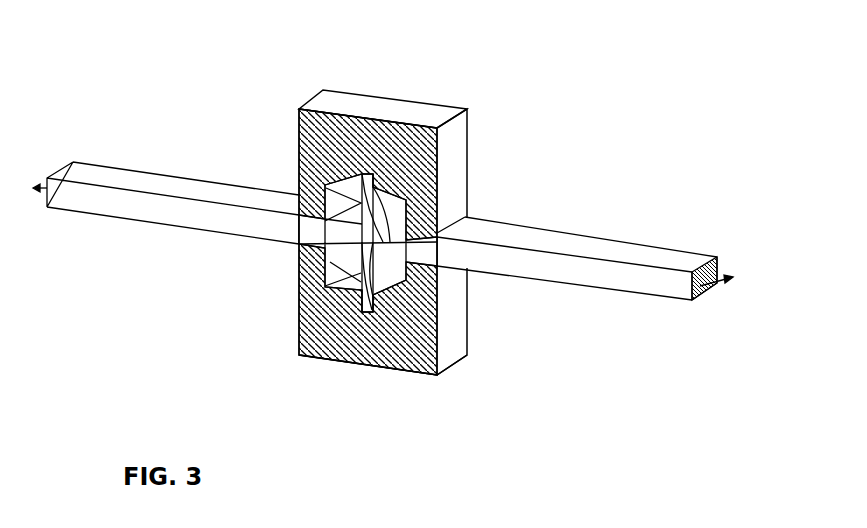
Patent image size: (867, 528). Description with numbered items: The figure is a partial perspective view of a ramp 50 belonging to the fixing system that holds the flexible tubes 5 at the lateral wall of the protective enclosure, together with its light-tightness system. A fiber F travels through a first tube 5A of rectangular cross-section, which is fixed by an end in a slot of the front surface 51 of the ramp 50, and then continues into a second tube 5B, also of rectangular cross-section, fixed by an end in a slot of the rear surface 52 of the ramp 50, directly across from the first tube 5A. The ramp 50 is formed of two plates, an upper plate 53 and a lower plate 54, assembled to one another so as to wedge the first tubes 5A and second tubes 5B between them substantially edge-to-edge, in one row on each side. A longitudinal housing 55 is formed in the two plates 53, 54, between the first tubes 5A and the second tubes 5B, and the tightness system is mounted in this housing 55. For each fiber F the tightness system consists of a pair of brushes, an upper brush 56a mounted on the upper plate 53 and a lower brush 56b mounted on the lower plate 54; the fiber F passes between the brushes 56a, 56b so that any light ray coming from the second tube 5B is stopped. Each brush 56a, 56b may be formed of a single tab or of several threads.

The flexible tube 5 is at (383, 207).
The first tube 5A is at (125, 169).
The second tube 5B is at (593, 238).
The fiber F is at (726, 266).
The ramp 50 is at (374, 229).
The front surface 51 is at (295, 127).
The rear surface 52 is at (462, 163).
The upper plate 53 is at (457, 107).
The lower plate 54 is at (412, 363).
The longitudinal housing 55 is at (335, 281).
The upper brush 56a is at (300, 163).
The lower brush 56b is at (325, 292).